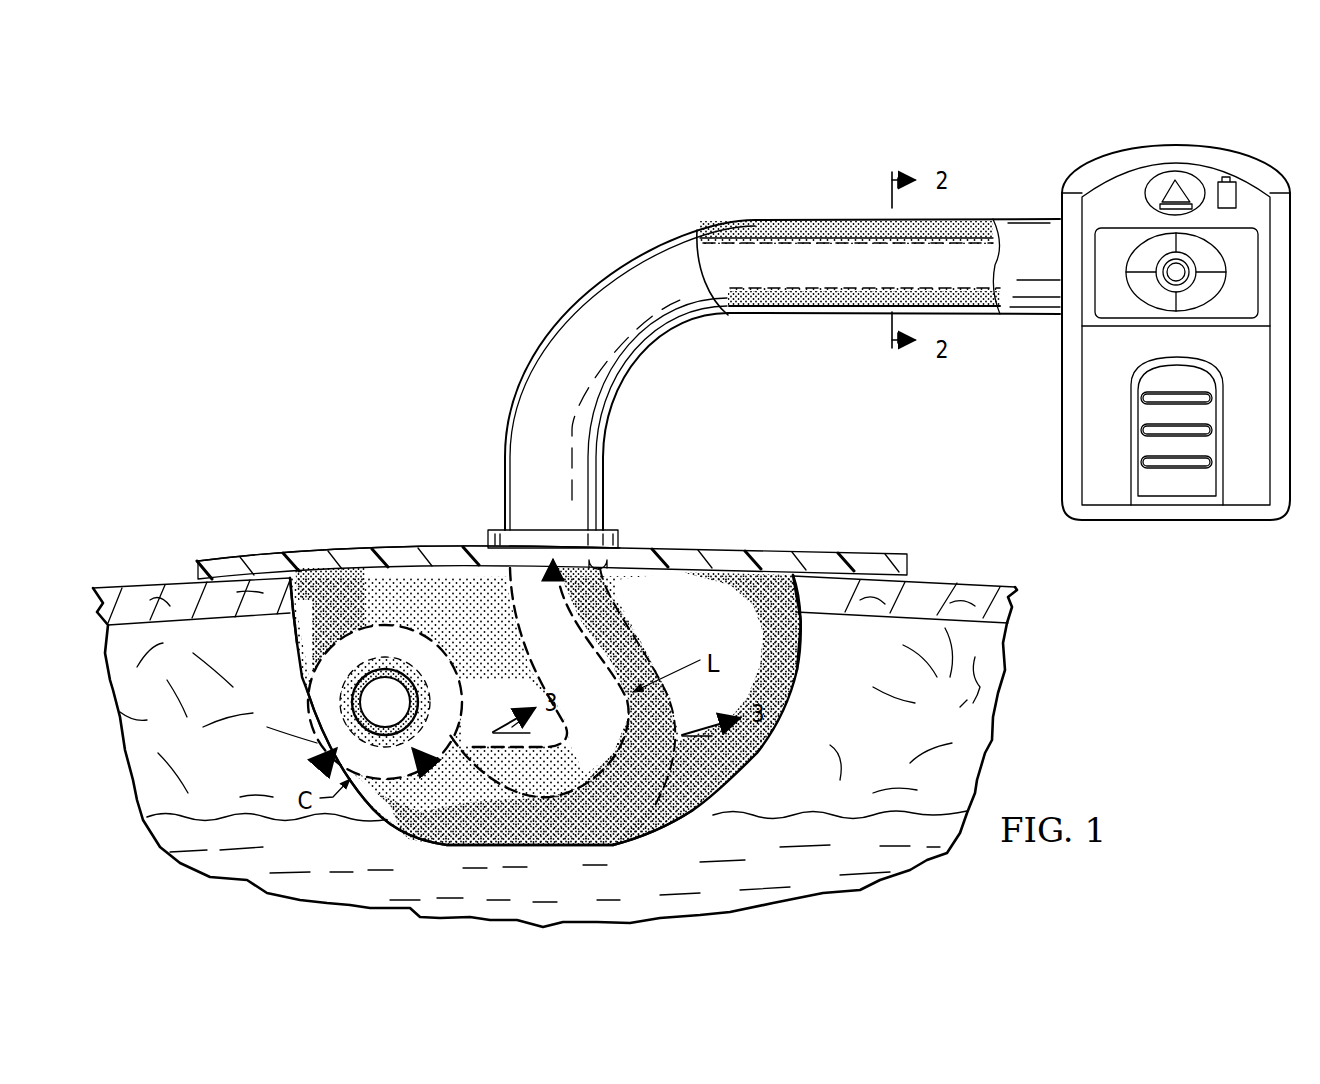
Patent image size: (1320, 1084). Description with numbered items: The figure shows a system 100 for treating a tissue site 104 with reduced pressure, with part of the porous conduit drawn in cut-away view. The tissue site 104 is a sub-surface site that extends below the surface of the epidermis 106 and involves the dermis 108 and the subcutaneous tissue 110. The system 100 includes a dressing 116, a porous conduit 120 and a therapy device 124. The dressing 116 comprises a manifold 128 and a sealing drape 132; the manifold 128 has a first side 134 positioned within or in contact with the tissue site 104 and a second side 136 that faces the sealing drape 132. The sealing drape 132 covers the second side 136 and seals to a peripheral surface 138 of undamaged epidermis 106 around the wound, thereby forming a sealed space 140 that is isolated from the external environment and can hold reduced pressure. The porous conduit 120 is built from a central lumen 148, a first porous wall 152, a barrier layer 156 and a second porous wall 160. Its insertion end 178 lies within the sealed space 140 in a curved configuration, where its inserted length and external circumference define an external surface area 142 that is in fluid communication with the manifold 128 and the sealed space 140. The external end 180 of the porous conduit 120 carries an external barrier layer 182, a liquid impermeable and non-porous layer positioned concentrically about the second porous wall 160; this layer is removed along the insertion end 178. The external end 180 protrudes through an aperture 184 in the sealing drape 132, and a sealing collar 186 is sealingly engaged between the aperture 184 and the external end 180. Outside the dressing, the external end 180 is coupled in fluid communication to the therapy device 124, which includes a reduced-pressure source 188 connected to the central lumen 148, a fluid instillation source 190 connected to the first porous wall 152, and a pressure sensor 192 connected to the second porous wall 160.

The system 100 is at (441, 340).
The tissue site 104 is at (547, 714).
The epidermis 106 is at (977, 582).
The dermis 108 is at (550, 712).
The subcutaneous tissue 110 is at (557, 856).
The dressing 116 is at (790, 524).
The porous conduit 120 is at (700, 441).
The therapy device 124 is at (1145, 298).
The manifold 128 is at (770, 677).
The sealing drape 132 is at (726, 546).
The first side 134 is at (440, 848).
The second side 136 is at (366, 554).
The peripheral surface 138 is at (227, 580).
The sealed space 140 is at (298, 598).
The external surface area 142 is at (650, 794).
The central lumen 148 is at (873, 252).
The first porous wall 152 is at (854, 246).
The barrier layer 156 is at (786, 223).
The second porous wall 160 is at (737, 219).
The insertion end 178 is at (390, 806).
The external end 180 is at (566, 305).
The external barrier layer 182 is at (595, 284).
The aperture 184 is at (600, 572).
The sealing collar 186 is at (612, 530).
The reduced-pressure source 188 is at (1115, 228).
The fluid instillation source 190 is at (1131, 445).
The pressure sensor 192 is at (1250, 228).